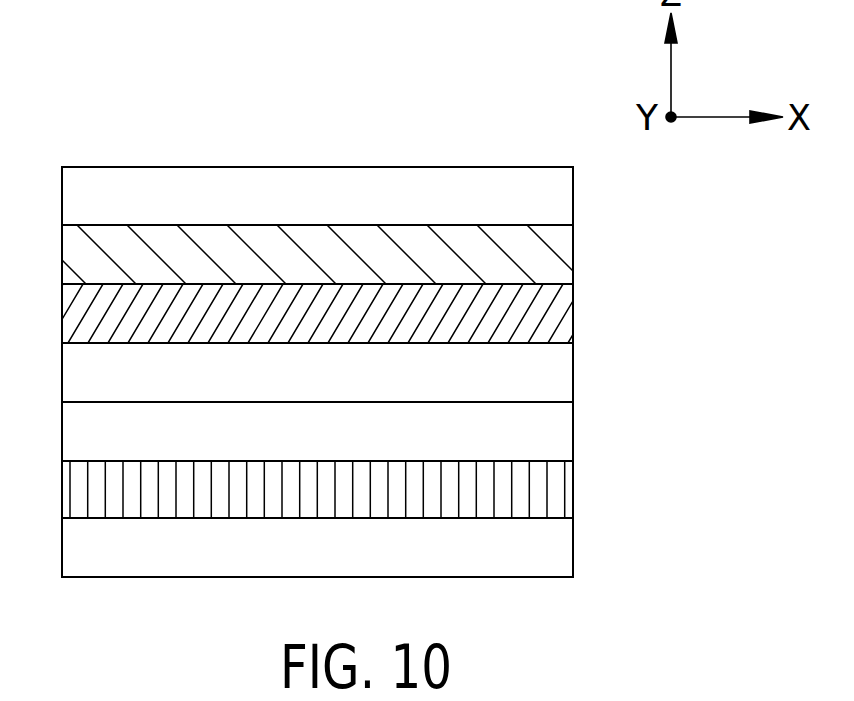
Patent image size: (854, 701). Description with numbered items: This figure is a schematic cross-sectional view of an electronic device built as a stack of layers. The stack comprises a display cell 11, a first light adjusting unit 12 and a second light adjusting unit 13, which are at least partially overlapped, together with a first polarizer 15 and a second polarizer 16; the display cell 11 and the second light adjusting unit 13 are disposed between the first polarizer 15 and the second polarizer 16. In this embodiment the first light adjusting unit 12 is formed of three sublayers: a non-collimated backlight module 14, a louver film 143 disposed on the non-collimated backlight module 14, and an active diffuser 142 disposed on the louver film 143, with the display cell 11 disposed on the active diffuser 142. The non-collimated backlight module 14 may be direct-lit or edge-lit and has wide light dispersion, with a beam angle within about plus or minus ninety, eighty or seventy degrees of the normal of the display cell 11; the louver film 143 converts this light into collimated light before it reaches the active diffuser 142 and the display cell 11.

The second polarizer 16 is at (573, 195).
The second light adjusting unit 13 is at (573, 253).
The display cell 11 is at (573, 313).
The first polarizer 15 is at (573, 372).
The active diffuser 142 is at (573, 430).
The louver film 143 is at (573, 488).
The non-collimated backlight module 14 is at (363, 547).
The first light adjusting unit 12 is at (398, 489).